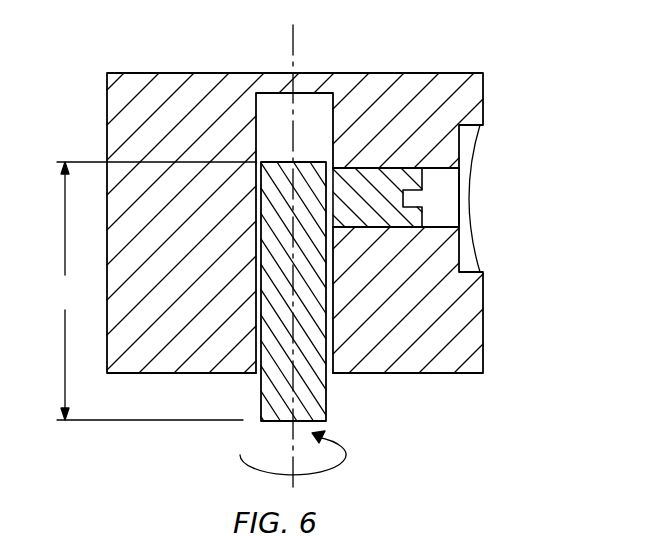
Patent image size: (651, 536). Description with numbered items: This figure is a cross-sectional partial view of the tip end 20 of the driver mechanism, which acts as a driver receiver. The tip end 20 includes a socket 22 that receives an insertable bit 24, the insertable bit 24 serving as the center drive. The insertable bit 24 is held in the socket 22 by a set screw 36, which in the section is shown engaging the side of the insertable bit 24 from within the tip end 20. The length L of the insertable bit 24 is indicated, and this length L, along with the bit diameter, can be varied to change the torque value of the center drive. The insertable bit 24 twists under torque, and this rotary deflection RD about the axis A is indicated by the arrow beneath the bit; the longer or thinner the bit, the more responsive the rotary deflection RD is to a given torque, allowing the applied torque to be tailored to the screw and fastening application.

The tip end 20 is at (483, 307).
The socket 22 is at (254, 115).
The insertable bit 24 is at (328, 403).
The set screw 36 is at (372, 180).
The axis A is at (293, 35).
The length L is at (156, 291).
The rotary deflection RD is at (245, 473).